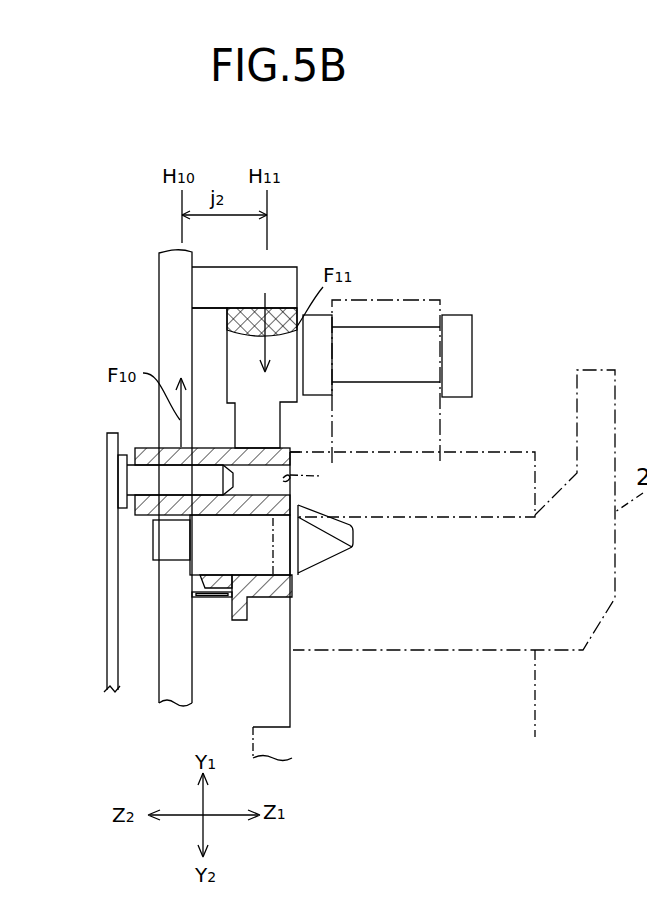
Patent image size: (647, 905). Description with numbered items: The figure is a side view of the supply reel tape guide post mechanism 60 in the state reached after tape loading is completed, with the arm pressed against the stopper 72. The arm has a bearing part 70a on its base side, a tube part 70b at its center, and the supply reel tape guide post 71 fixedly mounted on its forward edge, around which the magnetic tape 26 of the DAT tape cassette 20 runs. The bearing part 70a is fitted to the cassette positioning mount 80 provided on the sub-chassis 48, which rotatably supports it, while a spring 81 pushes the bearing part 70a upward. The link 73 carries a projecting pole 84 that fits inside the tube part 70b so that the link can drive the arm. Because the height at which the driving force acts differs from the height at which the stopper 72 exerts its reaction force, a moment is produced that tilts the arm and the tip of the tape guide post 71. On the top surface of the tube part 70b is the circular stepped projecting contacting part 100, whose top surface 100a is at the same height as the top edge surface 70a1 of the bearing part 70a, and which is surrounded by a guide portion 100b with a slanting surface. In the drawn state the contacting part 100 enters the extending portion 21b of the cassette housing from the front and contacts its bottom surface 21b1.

The supply reel tape guide post mechanism 60 is at (475, 197).
The sub-chassis 48 is at (167, 303).
The stopper 72 is at (292, 276).
The tube part 70b is at (207, 447).
The pole 84 is at (150, 447).
The link 73 is at (107, 587).
The cassette positioning mount 80 is at (263, 575).
The spring 81 is at (210, 597).
The top edge surface 70a1 is at (282, 592).
The bearing part 70a is at (272, 597).
The circular stepped projecting contacting part 100 is at (290, 495).
The top surface 100a is at (300, 455).
The guide portion 100b is at (352, 548).
The bottom surface 21b1 is at (320, 476).
The extending portion 21b is at (500, 462).
The DAT tape cassette 20 is at (535, 705).
The magnetic tape 26 is at (427, 308).
The supply reel tape guide post 71 is at (402, 327).